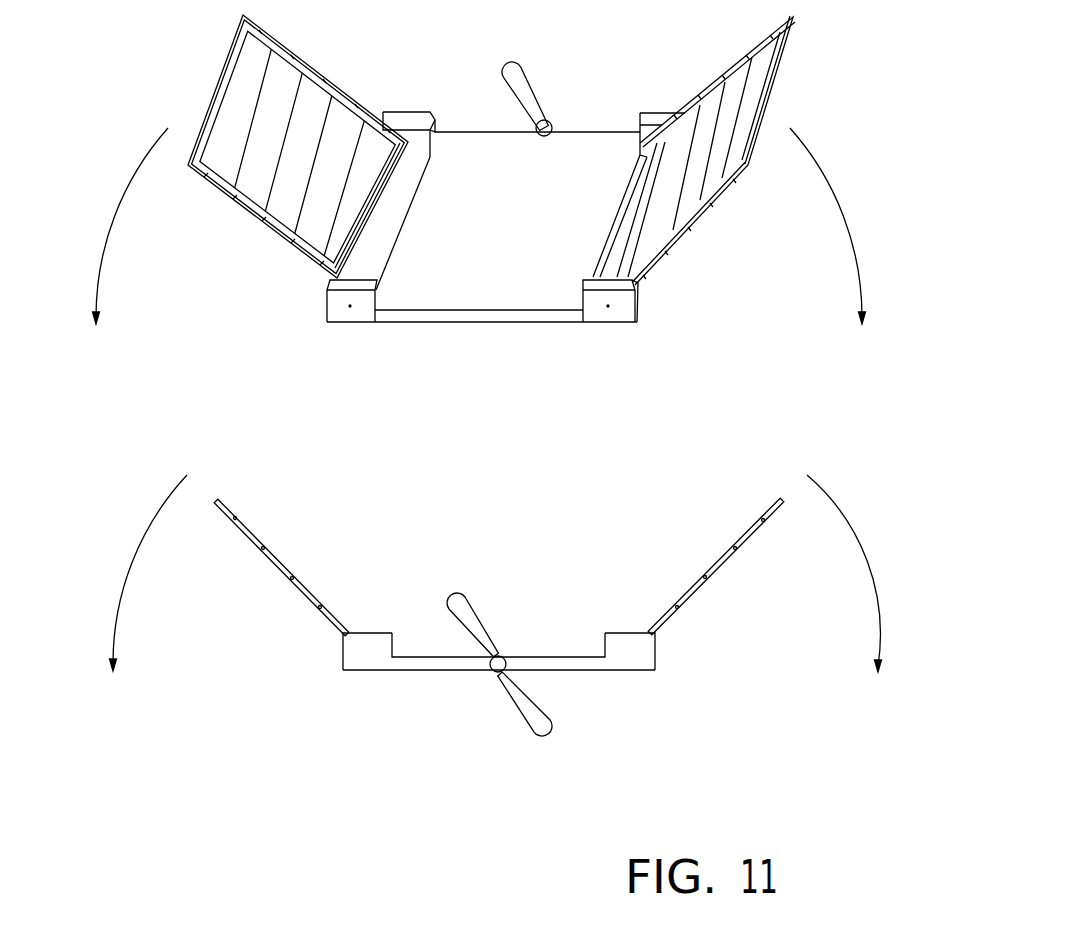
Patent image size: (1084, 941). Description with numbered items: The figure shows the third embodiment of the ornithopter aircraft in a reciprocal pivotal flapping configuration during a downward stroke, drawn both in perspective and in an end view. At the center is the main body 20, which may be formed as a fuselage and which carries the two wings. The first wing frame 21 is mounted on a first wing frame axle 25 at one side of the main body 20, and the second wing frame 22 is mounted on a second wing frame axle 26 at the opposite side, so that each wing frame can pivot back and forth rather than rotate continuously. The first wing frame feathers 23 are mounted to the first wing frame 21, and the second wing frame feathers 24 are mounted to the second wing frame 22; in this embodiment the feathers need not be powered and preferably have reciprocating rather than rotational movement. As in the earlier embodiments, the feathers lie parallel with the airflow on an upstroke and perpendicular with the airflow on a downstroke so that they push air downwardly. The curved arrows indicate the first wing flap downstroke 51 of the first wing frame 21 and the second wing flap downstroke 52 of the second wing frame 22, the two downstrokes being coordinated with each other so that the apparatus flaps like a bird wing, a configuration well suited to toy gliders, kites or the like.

The main body 20 is at (572, 653).
The first wing frame 21 is at (715, 585).
The second wing frame 22 is at (290, 590).
The first wing frame feathers 23 is at (728, 523).
The second wing frame feathers 24 is at (282, 540).
The first wing frame axle 25 is at (632, 652).
The second wing frame axle 26 is at (368, 652).
The first wing flap downstroke 51 is at (873, 558).
The second wing flap downstroke 52 is at (122, 553).